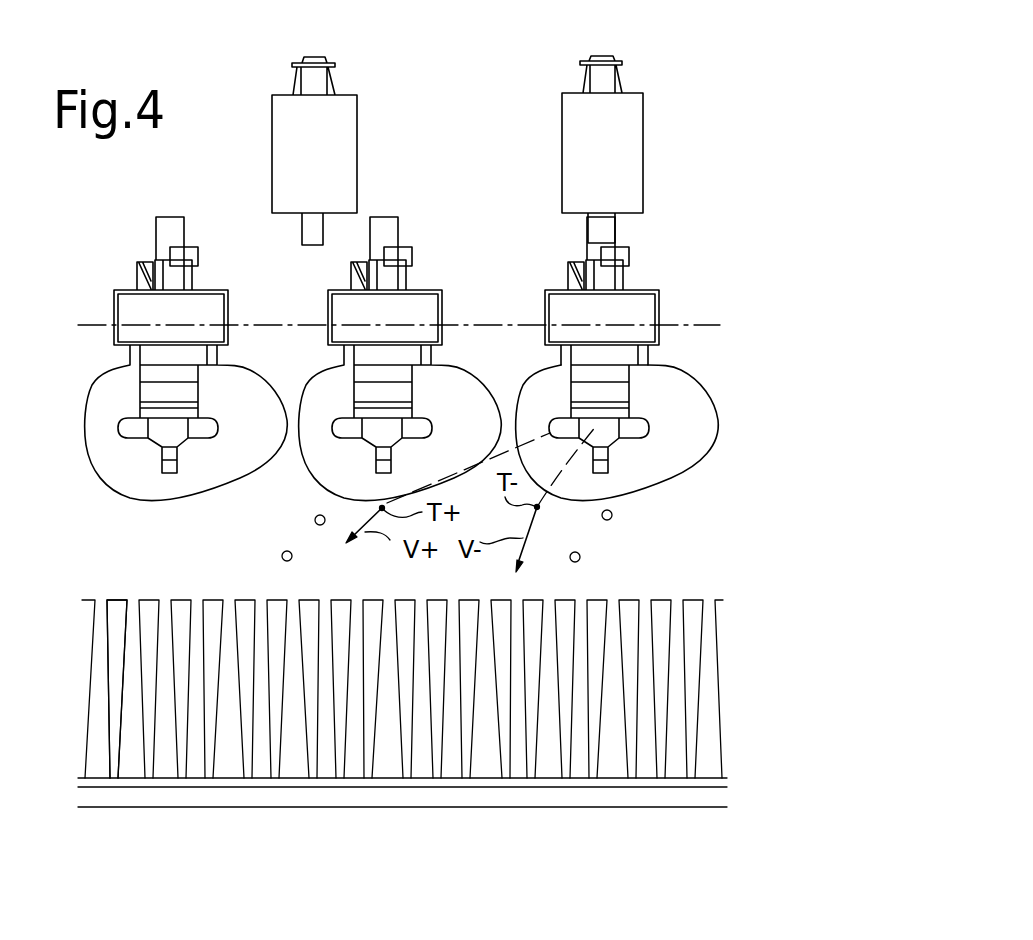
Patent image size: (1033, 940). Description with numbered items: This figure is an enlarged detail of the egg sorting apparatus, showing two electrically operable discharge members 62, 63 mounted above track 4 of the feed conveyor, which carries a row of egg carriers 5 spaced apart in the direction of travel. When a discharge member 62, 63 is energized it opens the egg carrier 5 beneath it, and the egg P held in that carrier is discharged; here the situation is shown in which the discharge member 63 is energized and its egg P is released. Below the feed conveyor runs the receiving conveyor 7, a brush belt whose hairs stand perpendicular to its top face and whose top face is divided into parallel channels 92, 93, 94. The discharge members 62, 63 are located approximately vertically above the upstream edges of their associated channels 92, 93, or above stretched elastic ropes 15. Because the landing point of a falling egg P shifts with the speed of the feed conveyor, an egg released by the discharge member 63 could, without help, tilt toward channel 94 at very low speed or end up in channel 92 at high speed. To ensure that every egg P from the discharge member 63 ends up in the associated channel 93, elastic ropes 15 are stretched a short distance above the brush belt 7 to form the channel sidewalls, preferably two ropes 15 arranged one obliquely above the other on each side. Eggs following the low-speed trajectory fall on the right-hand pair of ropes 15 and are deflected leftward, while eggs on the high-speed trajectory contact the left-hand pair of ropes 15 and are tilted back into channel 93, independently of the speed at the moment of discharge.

The track 4 is at (713, 323).
The egg carrier 5 is at (647, 302).
The receiving conveyor 7 is at (723, 670).
The elastic ropes 15 is at (283, 552).
The discharge member 62 is at (328, 125).
The discharge member 63 is at (620, 120).
The channel 92 is at (123, 670).
The channel 93 is at (377, 669).
The channel 94 is at (696, 670).
The egg P is at (692, 410).